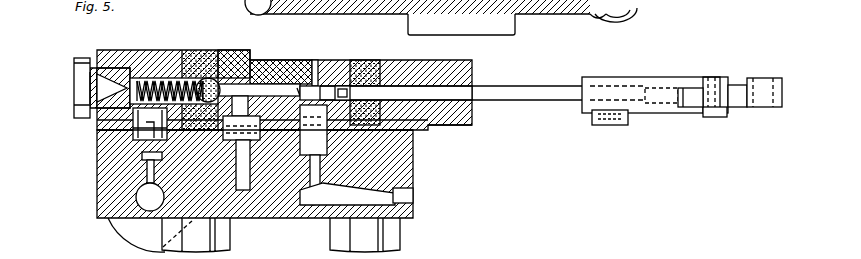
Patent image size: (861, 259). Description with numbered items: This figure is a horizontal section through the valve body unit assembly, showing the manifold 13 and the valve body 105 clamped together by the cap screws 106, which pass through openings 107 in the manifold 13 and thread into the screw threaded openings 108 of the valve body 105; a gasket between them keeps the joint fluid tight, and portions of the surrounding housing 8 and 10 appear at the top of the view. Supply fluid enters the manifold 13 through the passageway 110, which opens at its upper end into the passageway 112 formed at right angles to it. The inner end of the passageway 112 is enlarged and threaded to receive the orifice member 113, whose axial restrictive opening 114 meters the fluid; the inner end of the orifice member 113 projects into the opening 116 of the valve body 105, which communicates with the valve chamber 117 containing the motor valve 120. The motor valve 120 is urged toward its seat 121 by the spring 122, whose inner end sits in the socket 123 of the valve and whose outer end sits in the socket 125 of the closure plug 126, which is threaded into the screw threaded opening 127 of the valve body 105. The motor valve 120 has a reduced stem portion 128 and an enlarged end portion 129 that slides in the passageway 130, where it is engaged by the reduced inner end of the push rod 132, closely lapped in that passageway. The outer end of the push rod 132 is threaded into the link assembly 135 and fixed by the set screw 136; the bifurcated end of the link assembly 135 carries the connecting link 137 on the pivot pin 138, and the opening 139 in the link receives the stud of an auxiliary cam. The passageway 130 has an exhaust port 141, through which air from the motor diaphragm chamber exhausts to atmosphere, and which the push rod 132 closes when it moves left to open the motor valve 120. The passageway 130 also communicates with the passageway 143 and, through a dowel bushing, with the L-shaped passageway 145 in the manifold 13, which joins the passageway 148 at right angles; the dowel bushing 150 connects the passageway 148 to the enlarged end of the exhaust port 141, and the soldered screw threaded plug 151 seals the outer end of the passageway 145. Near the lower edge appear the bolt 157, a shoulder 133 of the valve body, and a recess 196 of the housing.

The housing 8 is at (338, 12).
The housing portion 10 is at (628, 9).
The manifold 13 is at (108, 174).
The valve body 105 is at (473, 68).
The cap screws 106 is at (232, 246).
The openings 107 is at (383, 170).
The screw threaded openings 108 is at (187, 56).
The passageway 110 is at (110, 220).
The passageway 112 is at (150, 198).
The orifice member 113 is at (147, 153).
The axial restrictive opening 114 is at (120, 136).
The opening 116 is at (100, 123).
The valve chamber 117 is at (107, 72).
The motor valve 120 is at (230, 58).
The seat 121 is at (280, 44).
The spring 122 is at (157, 58).
The socket 123 is at (207, 78).
The socket 125 is at (90, 97).
The closure plug 126 is at (76, 82).
The screw threaded opening 127 is at (82, 67).
The reduced stem portion 128 is at (294, 195).
The enlarged end portion 129 is at (336, 66).
The passageway 130 is at (330, 48).
The push rod 132 is at (492, 101).
The body shoulder 133 is at (450, 127).
The link assembly 135 is at (640, 115).
The set screw 136 is at (608, 124).
The connecting link 137 is at (737, 107).
The pivot pin 138 is at (713, 118).
The opening 139 is at (758, 85).
The exhaust port opening 141 is at (352, 64).
The passageway 143 is at (313, 62).
The L-shaped passageway 145 is at (298, 198).
The passageway 148 is at (318, 183).
The dowel bushing 150 is at (378, 135).
The screw threaded plug 151 is at (407, 205).
The bolt 157 is at (137, 253).
The recess 196 is at (549, 13).